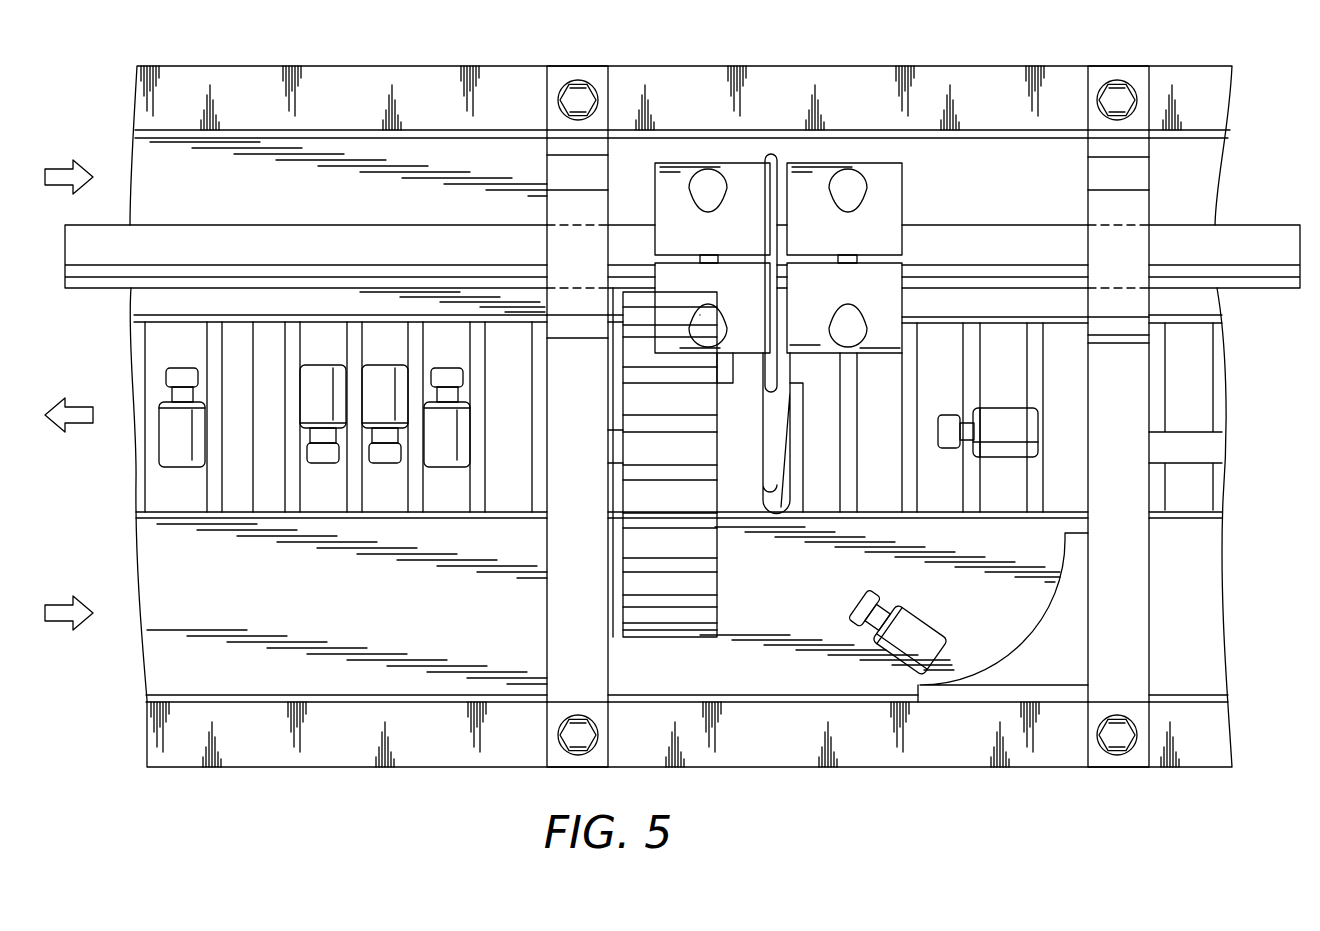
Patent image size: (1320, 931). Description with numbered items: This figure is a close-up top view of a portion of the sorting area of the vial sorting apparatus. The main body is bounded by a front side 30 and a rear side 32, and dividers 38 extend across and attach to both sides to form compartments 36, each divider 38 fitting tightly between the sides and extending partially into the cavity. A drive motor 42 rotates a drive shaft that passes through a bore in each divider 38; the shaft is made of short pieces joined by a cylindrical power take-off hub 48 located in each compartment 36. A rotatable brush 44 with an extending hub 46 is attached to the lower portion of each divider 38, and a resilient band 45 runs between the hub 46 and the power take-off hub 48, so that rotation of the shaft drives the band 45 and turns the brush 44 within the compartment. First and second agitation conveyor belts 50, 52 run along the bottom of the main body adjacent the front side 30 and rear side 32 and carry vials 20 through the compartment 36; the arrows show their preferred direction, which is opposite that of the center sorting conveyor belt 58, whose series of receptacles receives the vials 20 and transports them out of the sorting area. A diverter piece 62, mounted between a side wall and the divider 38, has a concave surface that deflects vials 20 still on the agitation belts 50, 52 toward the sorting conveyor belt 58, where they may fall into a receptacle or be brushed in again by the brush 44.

The vial 20 is at (1002, 425).
The front side 30 is at (1057, 746).
The rear side 32 is at (946, 78).
The compartment 36 is at (782, 690).
The divider 38 is at (568, 633).
The drive motor 42 is at (188, 247).
The rotatable brush 44 is at (672, 648).
The resilient band 45 is at (783, 165).
The extending hub 46 is at (738, 490).
The power take-off hub 48 is at (724, 172).
The first agitation conveyor belt 50 is at (330, 160).
The second agitation conveyor belt 52 is at (197, 680).
The sorting conveyor belt 58 is at (1190, 389).
The diverter piece 62 is at (1053, 680).